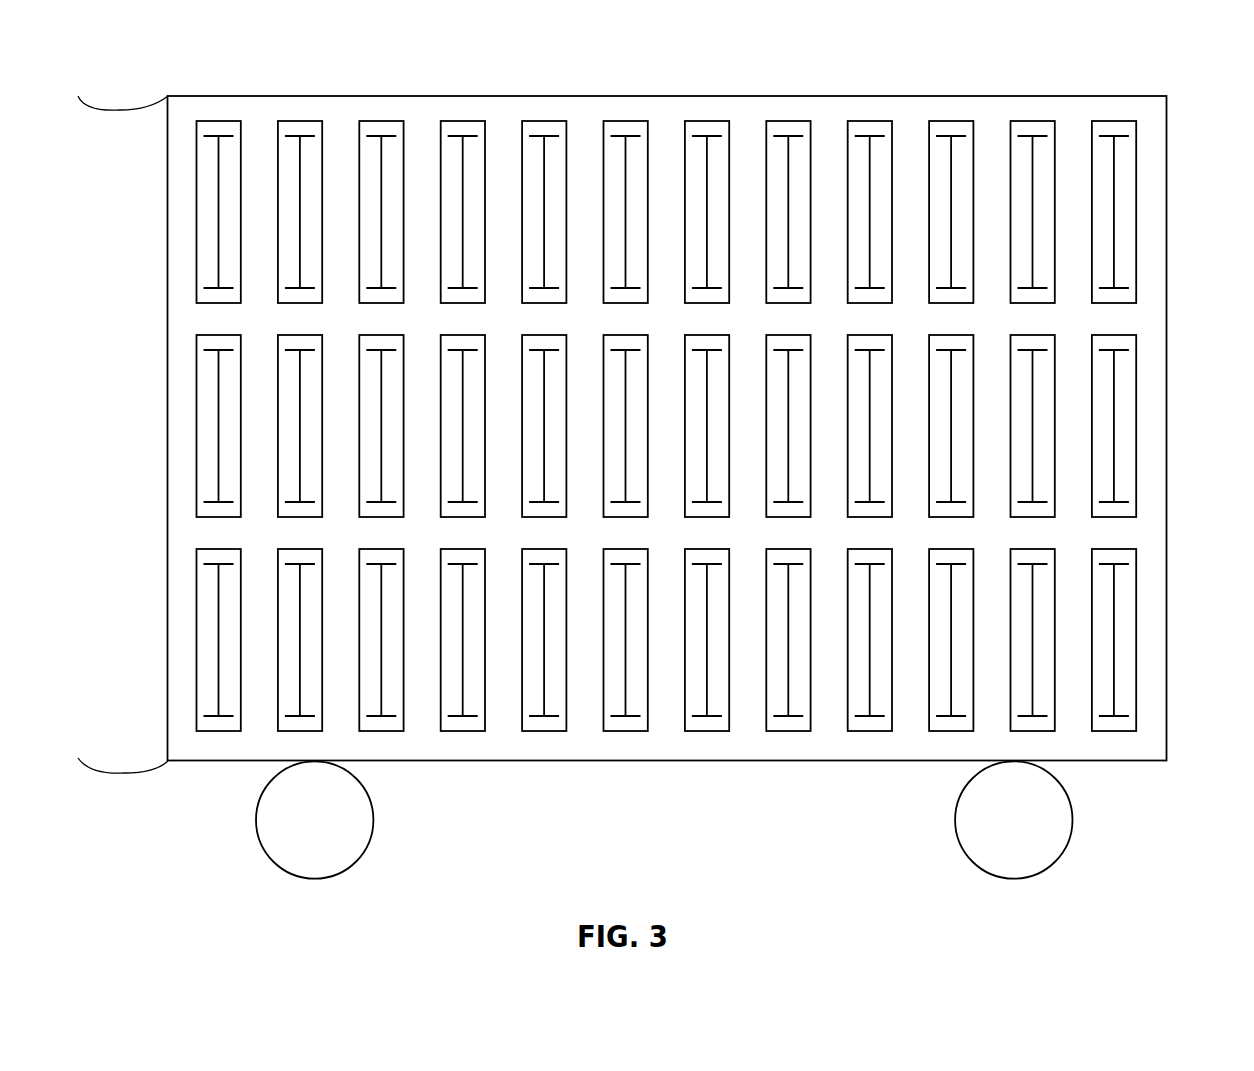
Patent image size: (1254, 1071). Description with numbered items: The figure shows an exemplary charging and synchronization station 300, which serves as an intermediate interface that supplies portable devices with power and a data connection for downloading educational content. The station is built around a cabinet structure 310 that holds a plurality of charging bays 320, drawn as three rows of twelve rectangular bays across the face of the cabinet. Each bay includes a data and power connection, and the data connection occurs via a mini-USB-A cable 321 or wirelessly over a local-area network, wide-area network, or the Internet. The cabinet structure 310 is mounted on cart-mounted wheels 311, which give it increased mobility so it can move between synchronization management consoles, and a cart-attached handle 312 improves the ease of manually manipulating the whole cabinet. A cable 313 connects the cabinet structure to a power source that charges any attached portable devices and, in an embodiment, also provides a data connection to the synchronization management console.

The charging and synchronization station 300 is at (1242, 56).
The cabinet structure 310 is at (782, 97).
The cart-mounted wheels 311 is at (373, 822).
The cart-attached handle 312 is at (98, 108).
The cable 313 is at (110, 773).
The plurality of charging bays 320 is at (224, 122).
The mini-USB-A cable 321 is at (1137, 230).